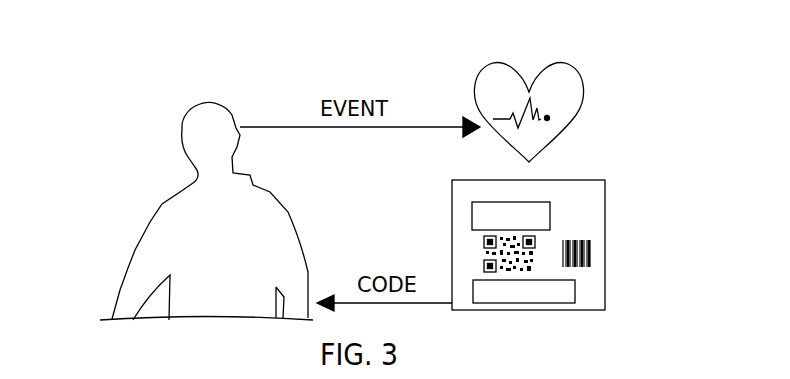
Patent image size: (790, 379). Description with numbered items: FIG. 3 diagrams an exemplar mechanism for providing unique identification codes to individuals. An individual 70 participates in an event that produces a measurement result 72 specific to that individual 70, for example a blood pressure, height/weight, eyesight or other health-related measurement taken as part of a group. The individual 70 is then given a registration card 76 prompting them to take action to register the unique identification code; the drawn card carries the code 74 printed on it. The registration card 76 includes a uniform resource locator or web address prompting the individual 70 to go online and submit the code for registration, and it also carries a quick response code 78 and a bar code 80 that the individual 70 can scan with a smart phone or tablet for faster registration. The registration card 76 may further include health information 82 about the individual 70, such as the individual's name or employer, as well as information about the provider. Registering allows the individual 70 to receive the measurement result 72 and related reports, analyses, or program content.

The individual 70 is at (150, 219).
The measurement result 72 is at (582, 82).
The code 74 is at (577, 292).
The registration card 76 is at (583, 170).
The quick response (QR) code 78 is at (487, 251).
The bar code 80 is at (592, 253).
The health information 82 is at (552, 213).